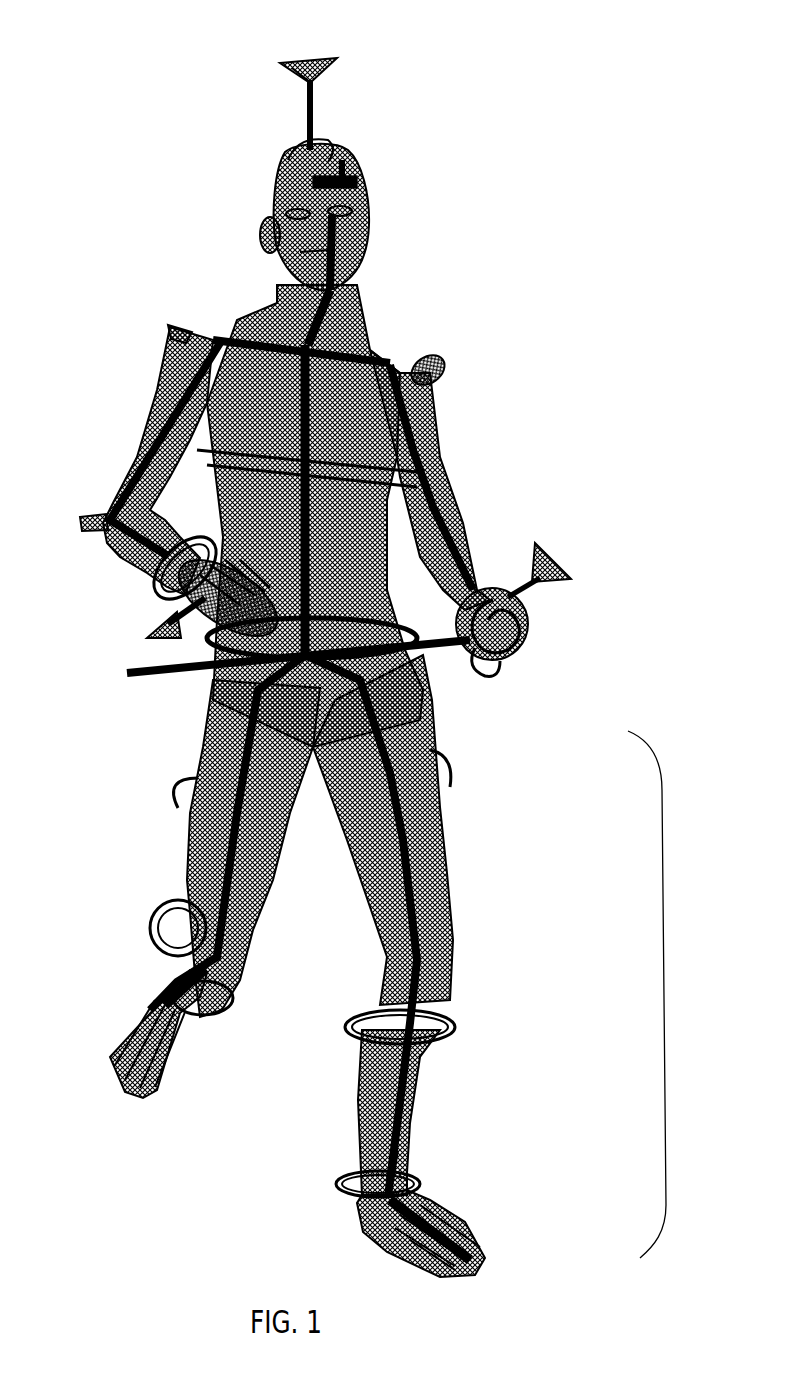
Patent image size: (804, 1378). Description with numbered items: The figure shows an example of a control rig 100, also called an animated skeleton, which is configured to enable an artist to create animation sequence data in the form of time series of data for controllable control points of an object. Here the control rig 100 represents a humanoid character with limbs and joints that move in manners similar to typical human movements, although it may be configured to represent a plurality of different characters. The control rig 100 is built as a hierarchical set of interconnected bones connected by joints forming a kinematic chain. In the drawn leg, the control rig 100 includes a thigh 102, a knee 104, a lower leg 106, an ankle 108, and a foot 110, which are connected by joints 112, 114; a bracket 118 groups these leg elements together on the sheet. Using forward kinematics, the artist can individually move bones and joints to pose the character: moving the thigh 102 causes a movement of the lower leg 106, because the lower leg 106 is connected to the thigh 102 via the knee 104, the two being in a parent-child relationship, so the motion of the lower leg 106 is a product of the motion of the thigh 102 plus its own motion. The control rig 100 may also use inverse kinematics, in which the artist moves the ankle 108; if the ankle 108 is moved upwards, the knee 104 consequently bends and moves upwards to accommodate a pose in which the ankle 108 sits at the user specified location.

The control rig 100 is at (663, 41).
The thigh 102 is at (403, 810).
The knee 104 is at (437, 930).
The lower leg 106 is at (417, 1090).
The ankle 108 is at (413, 1153).
The foot 110 is at (437, 1217).
The joint 112 is at (420, 942).
The joint 114 is at (420, 1186).
The leg exoskeleton assembly 118 is at (667, 995).